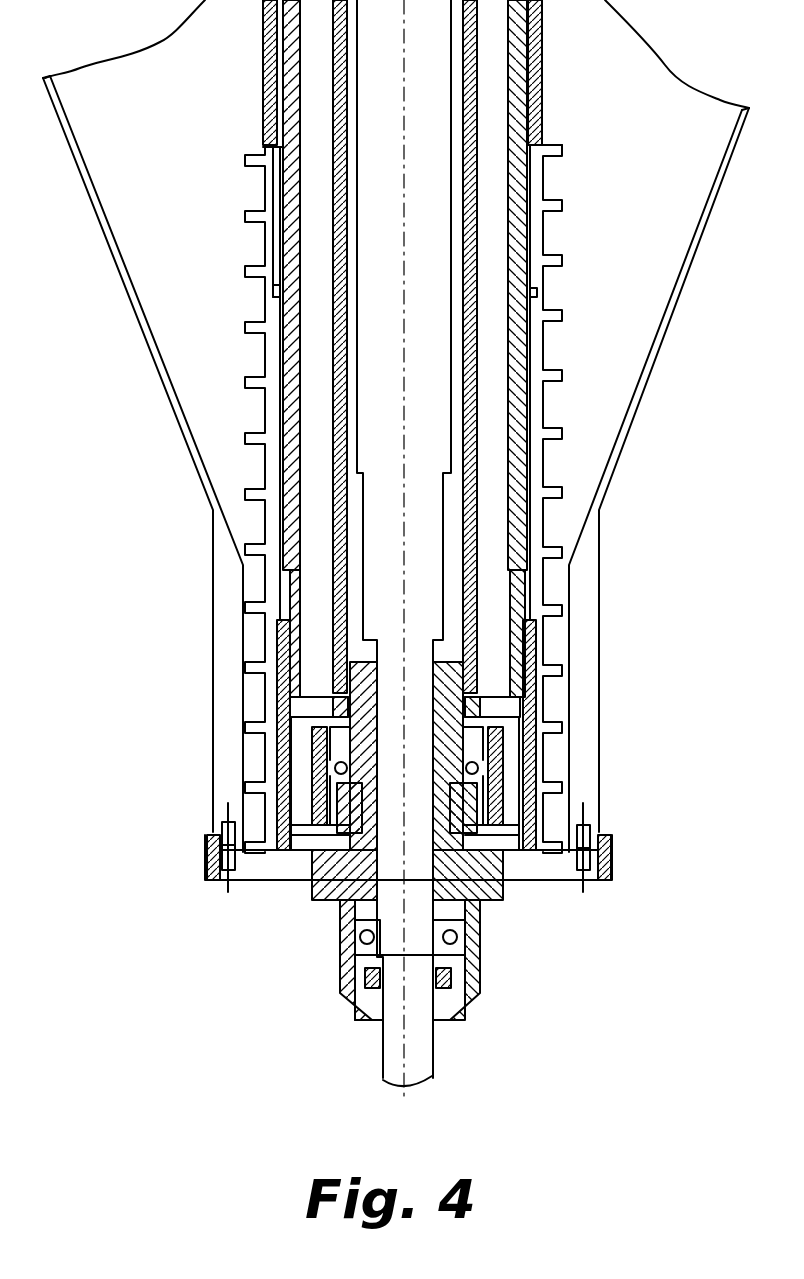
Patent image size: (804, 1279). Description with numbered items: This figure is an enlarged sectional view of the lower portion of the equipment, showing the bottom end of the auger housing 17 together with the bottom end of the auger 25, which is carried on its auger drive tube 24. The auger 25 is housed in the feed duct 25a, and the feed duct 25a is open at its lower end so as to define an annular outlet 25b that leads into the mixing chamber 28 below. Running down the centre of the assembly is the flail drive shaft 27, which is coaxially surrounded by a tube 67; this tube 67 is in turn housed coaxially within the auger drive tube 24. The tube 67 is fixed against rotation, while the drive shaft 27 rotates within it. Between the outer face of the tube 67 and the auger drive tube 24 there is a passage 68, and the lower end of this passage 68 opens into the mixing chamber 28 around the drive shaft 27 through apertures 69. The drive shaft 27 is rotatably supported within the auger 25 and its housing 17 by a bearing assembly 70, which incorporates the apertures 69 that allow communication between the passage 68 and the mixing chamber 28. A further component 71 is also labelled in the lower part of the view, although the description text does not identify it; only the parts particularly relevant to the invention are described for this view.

The auger housing 17 is at (590, 700).
The auger drive tube 24 is at (290, 290).
The auger 25 is at (560, 662).
The feed duct 25a is at (553, 522).
The annular outlet 25b is at (555, 880).
The drive shaft 27 is at (375, 345).
The mixing chamber 28 is at (283, 1056).
The tube 67 is at (334, 148).
The passage 68 is at (490, 322).
The apertures 69 is at (275, 868).
The bearing assembly 70 is at (508, 915).
The hub 71 is at (355, 880).